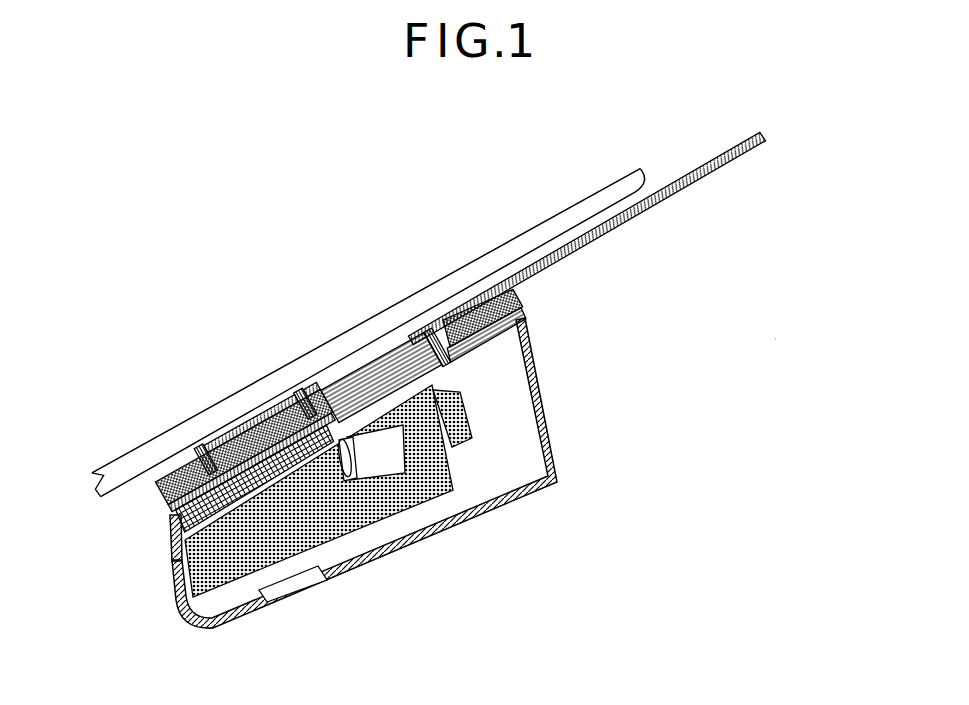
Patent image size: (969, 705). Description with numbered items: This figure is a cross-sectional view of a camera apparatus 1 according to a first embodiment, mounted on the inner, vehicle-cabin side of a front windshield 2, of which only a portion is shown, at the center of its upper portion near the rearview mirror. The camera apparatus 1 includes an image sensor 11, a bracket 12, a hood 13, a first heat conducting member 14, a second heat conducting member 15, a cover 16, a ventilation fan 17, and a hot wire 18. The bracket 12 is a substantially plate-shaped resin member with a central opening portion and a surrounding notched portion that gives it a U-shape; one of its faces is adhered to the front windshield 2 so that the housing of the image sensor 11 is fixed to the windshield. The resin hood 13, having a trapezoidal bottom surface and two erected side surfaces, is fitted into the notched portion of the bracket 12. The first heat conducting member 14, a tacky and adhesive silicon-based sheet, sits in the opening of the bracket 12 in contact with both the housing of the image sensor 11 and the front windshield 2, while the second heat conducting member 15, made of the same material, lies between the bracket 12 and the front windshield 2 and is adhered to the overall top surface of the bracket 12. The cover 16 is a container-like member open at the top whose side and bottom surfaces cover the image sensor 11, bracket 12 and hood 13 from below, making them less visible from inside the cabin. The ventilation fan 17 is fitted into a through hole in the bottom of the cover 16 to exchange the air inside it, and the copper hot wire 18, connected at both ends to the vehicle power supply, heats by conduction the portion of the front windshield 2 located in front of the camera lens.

The camera apparatus 1 is at (775, 339).
The front windshield 2 is at (573, 204).
The image sensor 11 is at (484, 408).
The bracket 12 is at (172, 515).
The hood 13 is at (167, 540).
The first heat conducting member 14 is at (352, 376).
The second heat conducting member 15 is at (163, 504).
The cover 16 is at (510, 507).
The ventilation fan 17 is at (307, 594).
The hot wire 18 is at (204, 446).